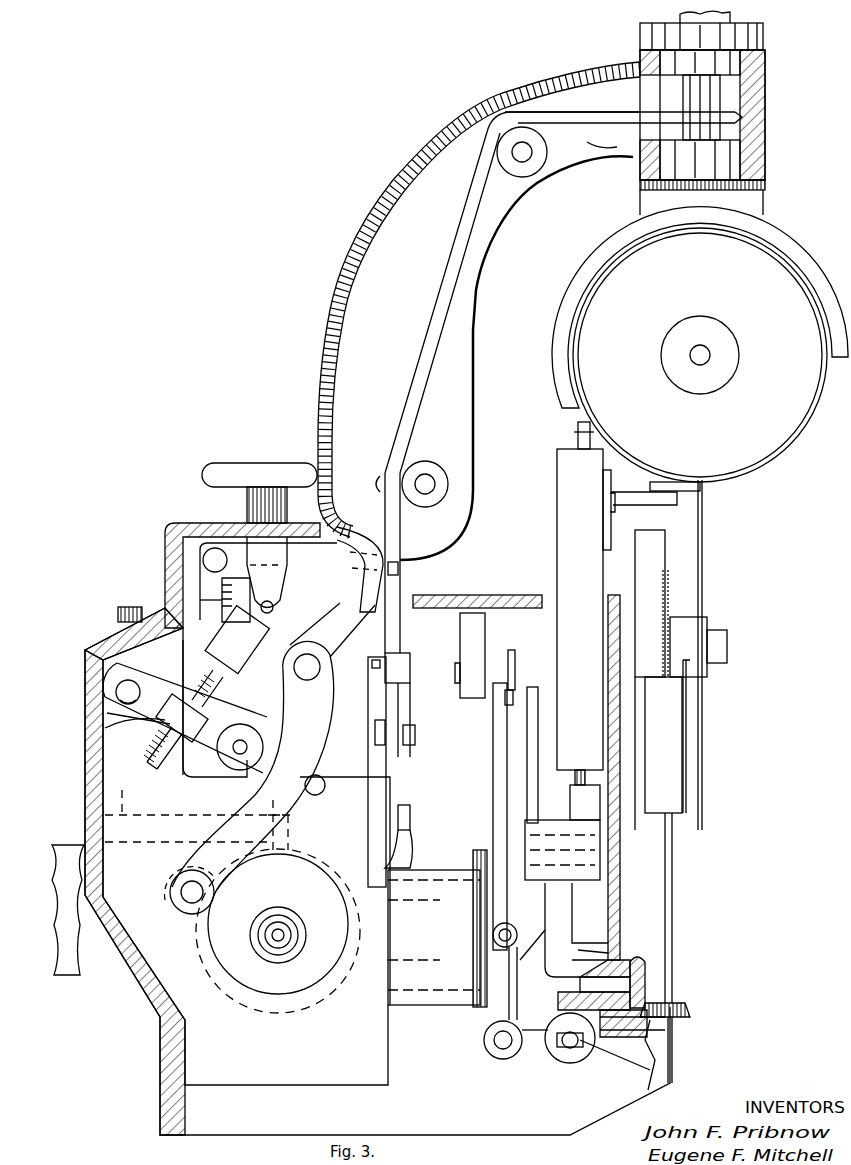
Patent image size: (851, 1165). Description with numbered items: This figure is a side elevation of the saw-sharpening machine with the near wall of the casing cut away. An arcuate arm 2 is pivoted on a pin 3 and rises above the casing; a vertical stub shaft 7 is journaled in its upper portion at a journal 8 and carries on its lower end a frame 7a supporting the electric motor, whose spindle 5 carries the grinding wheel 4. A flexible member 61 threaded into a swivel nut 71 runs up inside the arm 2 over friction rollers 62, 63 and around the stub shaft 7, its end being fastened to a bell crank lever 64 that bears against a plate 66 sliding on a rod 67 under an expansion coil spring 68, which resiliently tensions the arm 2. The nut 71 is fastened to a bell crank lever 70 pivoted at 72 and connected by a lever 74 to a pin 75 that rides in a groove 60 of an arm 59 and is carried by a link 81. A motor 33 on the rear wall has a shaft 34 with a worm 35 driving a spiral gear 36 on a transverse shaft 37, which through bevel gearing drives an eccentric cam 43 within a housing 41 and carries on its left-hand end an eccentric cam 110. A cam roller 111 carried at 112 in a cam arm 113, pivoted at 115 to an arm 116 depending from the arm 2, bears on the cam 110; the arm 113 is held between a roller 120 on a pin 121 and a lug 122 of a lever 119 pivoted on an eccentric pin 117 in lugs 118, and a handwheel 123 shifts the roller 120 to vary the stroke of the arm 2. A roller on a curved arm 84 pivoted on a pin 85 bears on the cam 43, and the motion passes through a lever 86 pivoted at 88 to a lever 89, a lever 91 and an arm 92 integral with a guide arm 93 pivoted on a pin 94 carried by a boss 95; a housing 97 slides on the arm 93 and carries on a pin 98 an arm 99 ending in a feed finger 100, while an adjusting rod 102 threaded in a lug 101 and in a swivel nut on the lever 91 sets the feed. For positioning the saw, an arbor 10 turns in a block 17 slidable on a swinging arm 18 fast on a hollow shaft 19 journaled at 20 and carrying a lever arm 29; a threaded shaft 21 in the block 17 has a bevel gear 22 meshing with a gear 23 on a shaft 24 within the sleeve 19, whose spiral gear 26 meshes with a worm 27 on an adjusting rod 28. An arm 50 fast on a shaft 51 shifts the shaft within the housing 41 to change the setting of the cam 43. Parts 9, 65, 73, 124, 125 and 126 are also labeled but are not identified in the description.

The arcuate arm 2 is at (333, 280).
The pin 3 is at (380, 478).
The grinding wheel 4 is at (775, 440).
The spindle 5 is at (712, 355).
The vertical stub shaft 7 is at (700, 100).
The frame 7a is at (755, 205).
The journal 8 is at (700, 62).
The guide rod 9 is at (705, 555).
The arbor 10 is at (727, 645).
The block 17 is at (672, 710).
The swinging arm 18 is at (660, 752).
The hollow shaft 19 is at (635, 955).
The journal 20 is at (641, 1001).
The threaded shaft 21 is at (668, 600).
The bevel gear 22 is at (680, 1005).
The companion gear 23 is at (647, 968).
The shaft 24 is at (690, 1017).
The spiral gear 26 is at (570, 1055).
The worm 27 is at (585, 1045).
The adjusting rod 28 is at (600, 1050).
The lever arm 29 is at (560, 1045).
The motor 33 is at (68, 975).
The shaft 34 is at (192, 809).
The worm 35 is at (290, 815).
The spiral gear 36 is at (300, 1018).
The transverse shaft 37 is at (275, 935).
The housing 41 is at (430, 975).
The eccentric cam 43 is at (478, 1010).
The arm 50 is at (505, 1005).
The shaft 51 is at (503, 1048).
The arm 59 is at (378, 745).
The groove 60 is at (377, 662).
The flexible member 61 is at (745, 118).
The friction roller 62 is at (522, 152).
The friction roller 63 is at (437, 472).
The bell crank lever 64 is at (232, 542).
The pivot 65 is at (208, 555).
The plate 66 is at (225, 590).
The rod 67 is at (118, 614).
The expansion coil spring 68 is at (222, 600).
The bell crank lever 70 is at (398, 656).
The swivel nut 71 is at (395, 672).
The pivot 72 is at (462, 658).
The pin 73 is at (412, 735).
The lever 74 is at (395, 772).
The pin 75 is at (410, 820).
The link 81 is at (408, 855).
The curved arm 84 is at (495, 748).
The pin 85 is at (512, 672).
The lever 86 is at (530, 765).
The pivot 88 is at (505, 703).
The lever 89 is at (525, 818).
The lever 91 is at (595, 840).
The arm 92 is at (545, 905).
The guide arm 93 is at (560, 790).
The pin 94 is at (540, 952).
The boss 95 is at (590, 950).
The housing 97 is at (570, 547).
The pin 98 is at (605, 500).
The arm 99 is at (650, 505).
The feed finger 100 is at (705, 490).
The lug 101 is at (580, 803).
The adjusting rod 102 is at (575, 432).
The eccentric cam 110 is at (300, 878).
The cam roller 111 is at (185, 900).
The roller mounting 112 is at (178, 897).
The cam arm 113 is at (320, 700).
The pivot 115 is at (320, 676).
The arm 116 is at (375, 597).
The pin 117 is at (120, 698).
The lugs 118 is at (110, 685).
The lever 119 is at (118, 724).
The roller 120 is at (222, 747).
The pin 121 is at (240, 750).
The lug 122 is at (322, 790).
The handwheel 123 is at (255, 475).
The block 124 is at (240, 665).
The nut 125 is at (215, 690).
The screw 126 is at (148, 762).